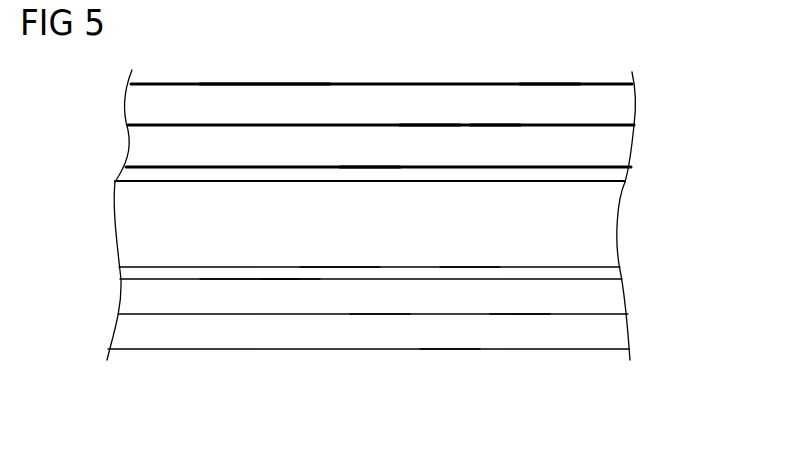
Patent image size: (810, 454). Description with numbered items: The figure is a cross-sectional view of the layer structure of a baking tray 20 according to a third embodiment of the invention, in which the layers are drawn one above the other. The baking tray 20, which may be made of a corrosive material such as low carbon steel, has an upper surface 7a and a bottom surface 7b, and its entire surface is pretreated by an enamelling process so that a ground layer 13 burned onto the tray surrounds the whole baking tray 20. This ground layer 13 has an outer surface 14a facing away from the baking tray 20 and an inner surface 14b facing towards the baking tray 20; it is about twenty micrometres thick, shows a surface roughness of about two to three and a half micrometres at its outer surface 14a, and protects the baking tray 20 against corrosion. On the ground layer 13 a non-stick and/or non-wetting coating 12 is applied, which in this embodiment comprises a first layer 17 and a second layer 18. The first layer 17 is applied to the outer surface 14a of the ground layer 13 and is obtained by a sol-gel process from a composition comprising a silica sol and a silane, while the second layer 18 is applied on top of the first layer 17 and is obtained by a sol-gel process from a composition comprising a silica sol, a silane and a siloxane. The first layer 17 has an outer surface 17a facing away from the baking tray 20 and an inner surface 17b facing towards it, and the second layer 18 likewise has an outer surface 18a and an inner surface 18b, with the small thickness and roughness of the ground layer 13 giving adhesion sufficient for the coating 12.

The non-stick and/or non-wetting coating 12 is at (712, 80).
The second layer 18 is at (598, 104).
The first layer 17 is at (598, 150).
The ground layer 13 is at (625, 182).
The baking tray 20 is at (600, 235).
The outer surface of the ground layer 14a is at (257, 166).
The inner surface of the ground layer 14b is at (318, 183).
The outer surface of the first layer 17a is at (418, 125).
The inner surface of the first layer 17b is at (364, 176).
The outer surface of the second layer 18a is at (543, 84).
The inner surface of the second layer 18b is at (494, 125).
The upper surface 7a is at (170, 185).
The bottom surface 7b is at (463, 269).